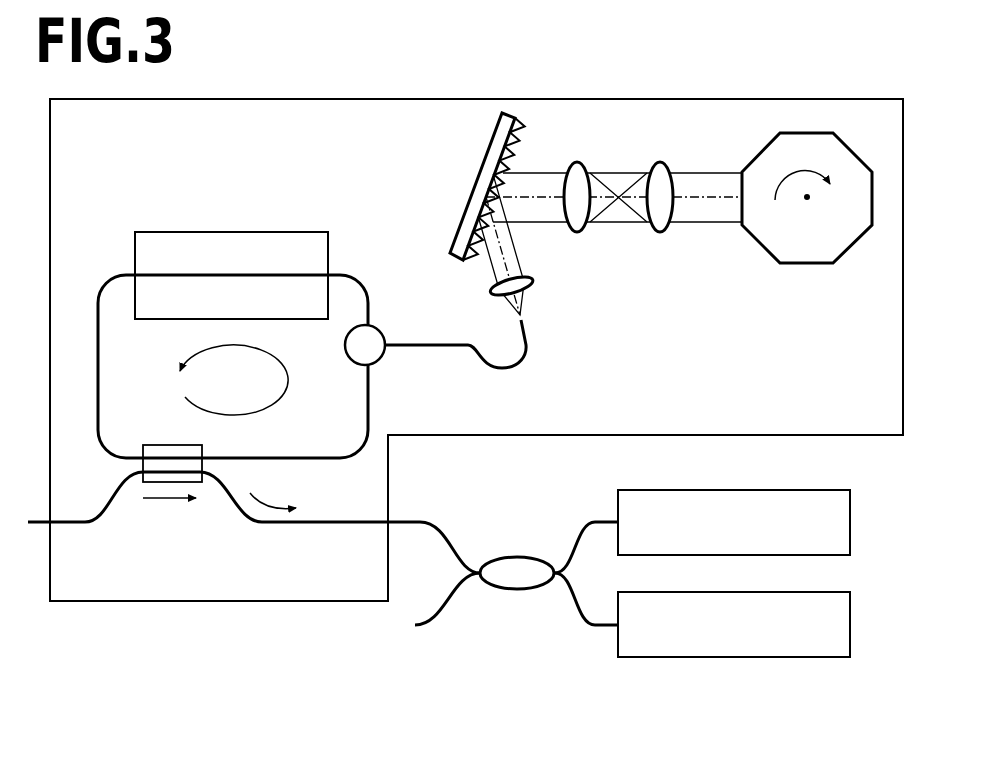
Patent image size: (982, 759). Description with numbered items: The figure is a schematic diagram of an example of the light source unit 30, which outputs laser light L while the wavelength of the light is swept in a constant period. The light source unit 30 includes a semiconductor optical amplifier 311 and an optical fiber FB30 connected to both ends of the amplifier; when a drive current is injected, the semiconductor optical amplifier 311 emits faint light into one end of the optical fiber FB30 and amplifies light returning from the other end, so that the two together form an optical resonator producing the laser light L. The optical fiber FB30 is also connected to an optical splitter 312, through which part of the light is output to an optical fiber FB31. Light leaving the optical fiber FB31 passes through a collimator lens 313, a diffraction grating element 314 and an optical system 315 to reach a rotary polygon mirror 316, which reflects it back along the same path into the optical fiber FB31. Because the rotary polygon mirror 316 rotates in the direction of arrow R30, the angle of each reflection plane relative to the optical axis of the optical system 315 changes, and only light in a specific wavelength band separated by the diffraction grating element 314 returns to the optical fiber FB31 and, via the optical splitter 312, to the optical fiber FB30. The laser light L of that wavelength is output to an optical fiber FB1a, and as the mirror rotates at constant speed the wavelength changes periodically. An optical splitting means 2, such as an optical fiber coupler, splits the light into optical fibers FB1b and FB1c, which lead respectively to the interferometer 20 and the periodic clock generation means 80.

The light source unit 30 is at (892, 440).
The semiconductor optical amplifier 311 is at (272, 231).
The optical fiber FB30 is at (109, 275).
The optical splitter 312 is at (374, 366).
The optical fiber FB31 is at (528, 344).
The collimator lens 313 is at (490, 292).
The diffraction grating element 314 is at (492, 135).
The optical system 315 is at (655, 233).
The rotary polygon mirror 316 is at (807, 225).
The direction of arrow R30 is at (801, 171).
The optical fiber FB1a is at (254, 529).
The laser light L is at (273, 493).
The optical splitting means 2 is at (515, 557).
The optical fiber FB1c is at (598, 523).
The optical fiber FB1b is at (597, 618).
The periodic clock generation means 80 is at (775, 488).
The interferometer 20 is at (772, 660).